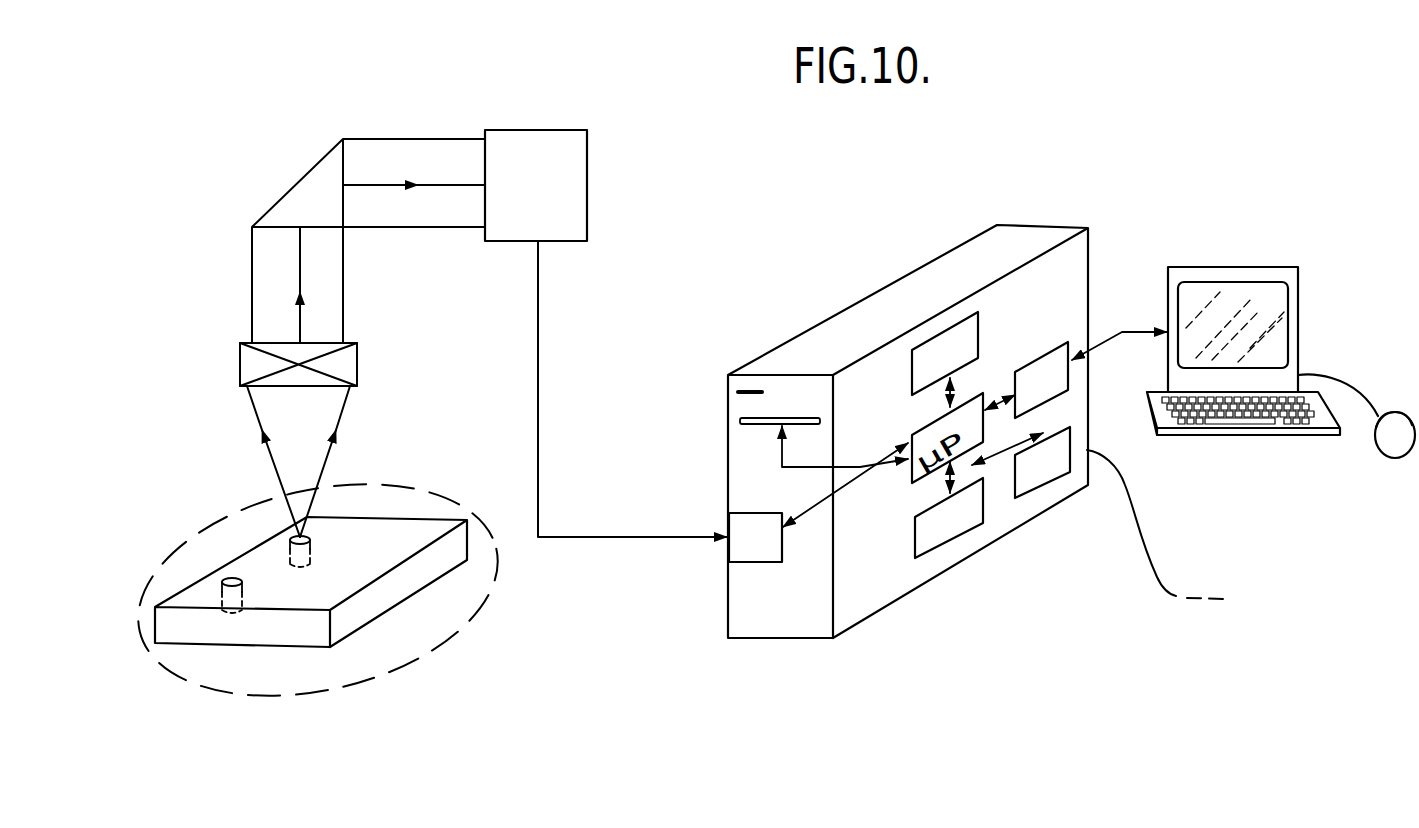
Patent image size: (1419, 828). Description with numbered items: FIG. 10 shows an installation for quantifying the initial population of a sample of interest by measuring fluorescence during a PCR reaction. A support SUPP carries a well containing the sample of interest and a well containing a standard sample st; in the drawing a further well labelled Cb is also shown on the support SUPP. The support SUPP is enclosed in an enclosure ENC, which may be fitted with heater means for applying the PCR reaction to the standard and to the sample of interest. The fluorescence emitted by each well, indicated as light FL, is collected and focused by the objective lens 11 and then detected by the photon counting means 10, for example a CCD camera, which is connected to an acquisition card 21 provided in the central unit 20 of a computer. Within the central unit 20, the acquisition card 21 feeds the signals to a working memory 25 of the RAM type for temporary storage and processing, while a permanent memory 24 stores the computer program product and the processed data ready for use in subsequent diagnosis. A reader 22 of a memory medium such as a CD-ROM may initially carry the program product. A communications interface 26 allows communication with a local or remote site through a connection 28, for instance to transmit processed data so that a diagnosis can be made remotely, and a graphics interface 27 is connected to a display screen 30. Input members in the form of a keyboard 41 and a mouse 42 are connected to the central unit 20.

The photon counting means 10 is at (587, 172).
The objective lens 11 is at (240, 362).
The central unit 20 is at (1050, 223).
The acquisition card 21 is at (750, 562).
The reader 22 is at (762, 425).
The permanent memory 24 is at (950, 540).
The working memory 25 is at (938, 332).
The communications interface 26 is at (1048, 480).
The graphics interface 27 is at (1082, 350).
The connection 28 is at (1158, 572).
The display screen 30 is at (1230, 267).
The keyboard 41 is at (1283, 436).
The mouse 42 is at (1400, 460).
The light beam FL is at (337, 412).
The calibration body Cb is at (298, 537).
The standard sample st is at (227, 582).
The support SUPP is at (390, 597).
The enclosure ENC is at (210, 697).